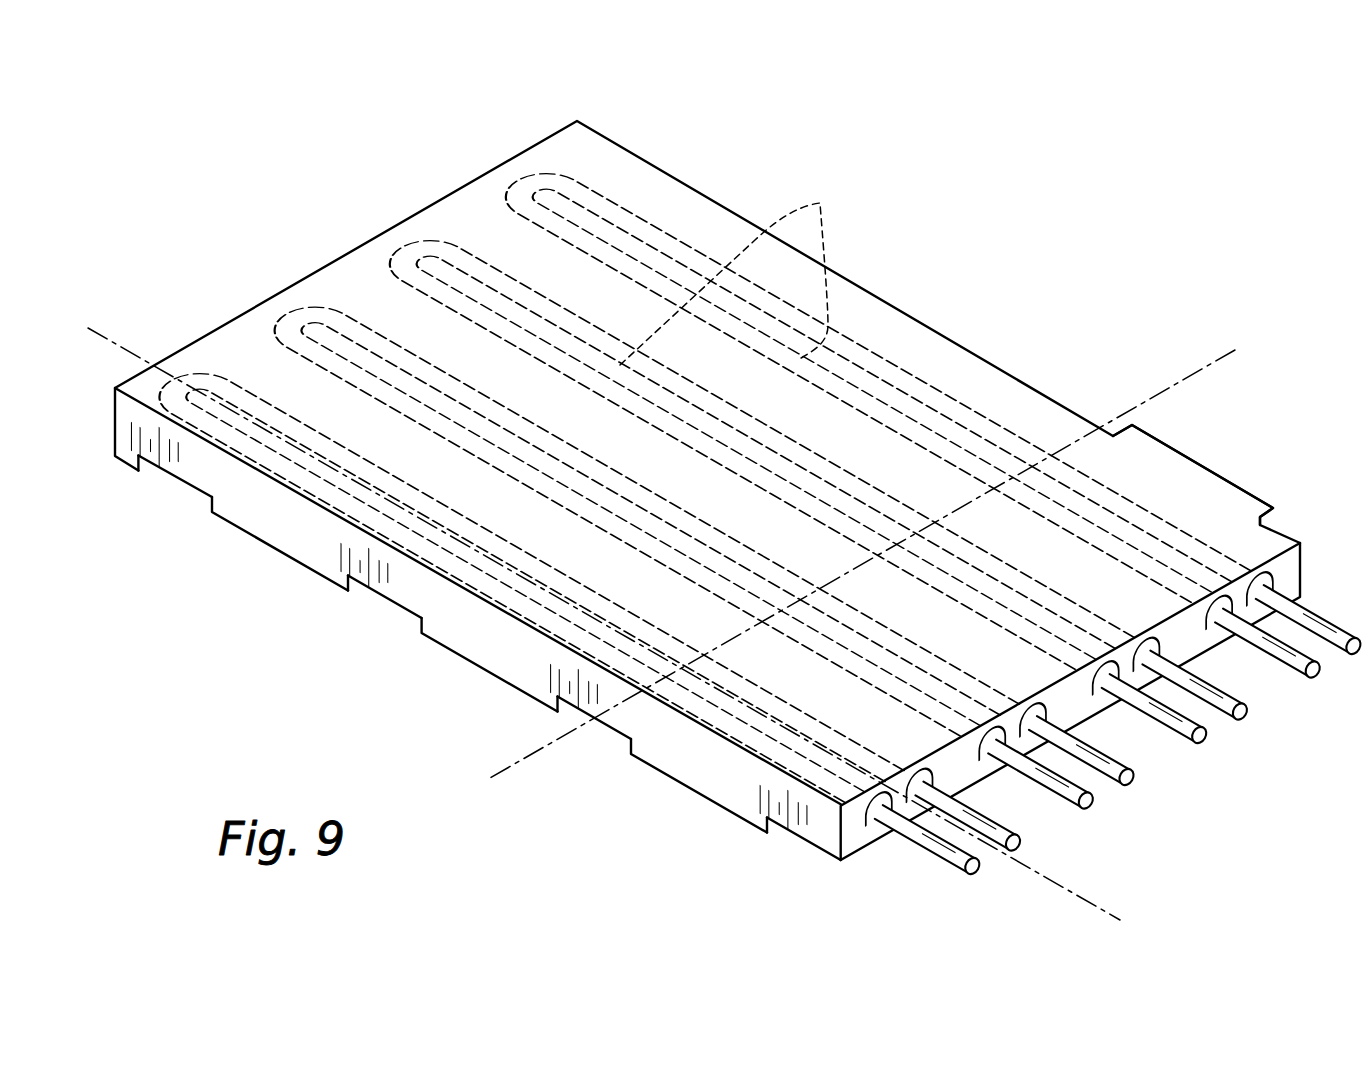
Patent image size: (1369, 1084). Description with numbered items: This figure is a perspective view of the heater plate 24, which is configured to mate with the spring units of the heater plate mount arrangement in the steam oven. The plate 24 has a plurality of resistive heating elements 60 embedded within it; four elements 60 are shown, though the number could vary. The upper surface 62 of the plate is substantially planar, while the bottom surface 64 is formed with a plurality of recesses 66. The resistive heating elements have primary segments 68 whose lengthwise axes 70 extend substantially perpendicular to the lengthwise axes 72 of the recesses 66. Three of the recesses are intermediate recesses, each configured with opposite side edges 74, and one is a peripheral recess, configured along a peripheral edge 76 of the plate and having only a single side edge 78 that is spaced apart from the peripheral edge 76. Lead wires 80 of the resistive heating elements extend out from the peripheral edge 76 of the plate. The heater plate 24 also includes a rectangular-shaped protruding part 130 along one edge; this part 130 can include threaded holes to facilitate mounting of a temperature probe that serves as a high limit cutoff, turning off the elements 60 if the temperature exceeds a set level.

The heater plate 24 is at (700, 526).
The resistive heating elements 60 is at (532, 168).
The upper surface 62 is at (385, 246).
The bottom surface 64 is at (287, 560).
The recesses 66 is at (185, 482).
The primary segments 68 is at (820, 203).
The lengthwise axes 70 is at (1100, 910).
The lengthwise axes 72 is at (1203, 365).
The side edges 74 is at (150, 466).
The peripheral edge 76 is at (862, 860).
The single side edge 78 is at (782, 845).
The lead wires 80 is at (1270, 660).
The protruding part 130 is at (1213, 470).